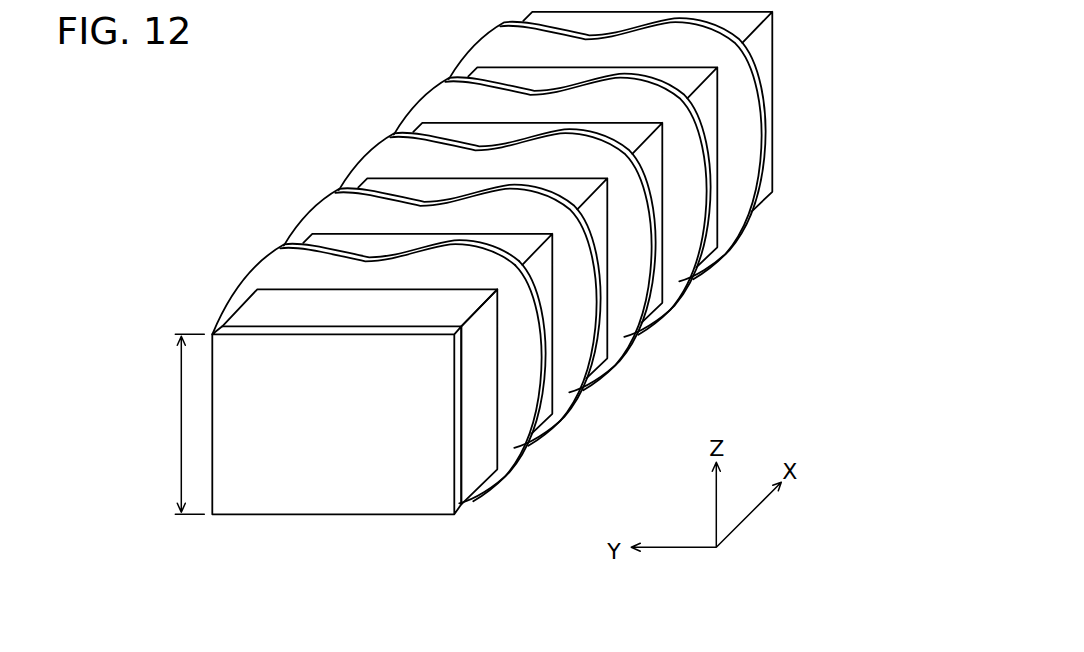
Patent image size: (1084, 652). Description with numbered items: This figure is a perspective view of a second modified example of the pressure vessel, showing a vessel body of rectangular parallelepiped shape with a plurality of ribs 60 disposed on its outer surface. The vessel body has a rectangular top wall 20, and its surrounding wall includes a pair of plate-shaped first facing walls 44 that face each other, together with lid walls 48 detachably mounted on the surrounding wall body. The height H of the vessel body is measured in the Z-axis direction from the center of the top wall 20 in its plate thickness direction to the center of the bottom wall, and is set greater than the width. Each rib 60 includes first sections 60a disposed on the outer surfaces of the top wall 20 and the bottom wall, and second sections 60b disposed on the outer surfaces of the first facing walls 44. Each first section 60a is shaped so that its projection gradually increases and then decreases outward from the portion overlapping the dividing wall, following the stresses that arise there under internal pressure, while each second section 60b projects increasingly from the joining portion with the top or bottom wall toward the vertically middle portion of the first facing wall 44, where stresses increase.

The top wall 20 is at (315, 443).
The first facing walls 44 is at (473, 478).
The lid walls 48 is at (416, 502).
The ribs 60 is at (461, 292).
The first sections 60a is at (288, 271).
The second sections 60b is at (520, 446).
The height H is at (177, 424).